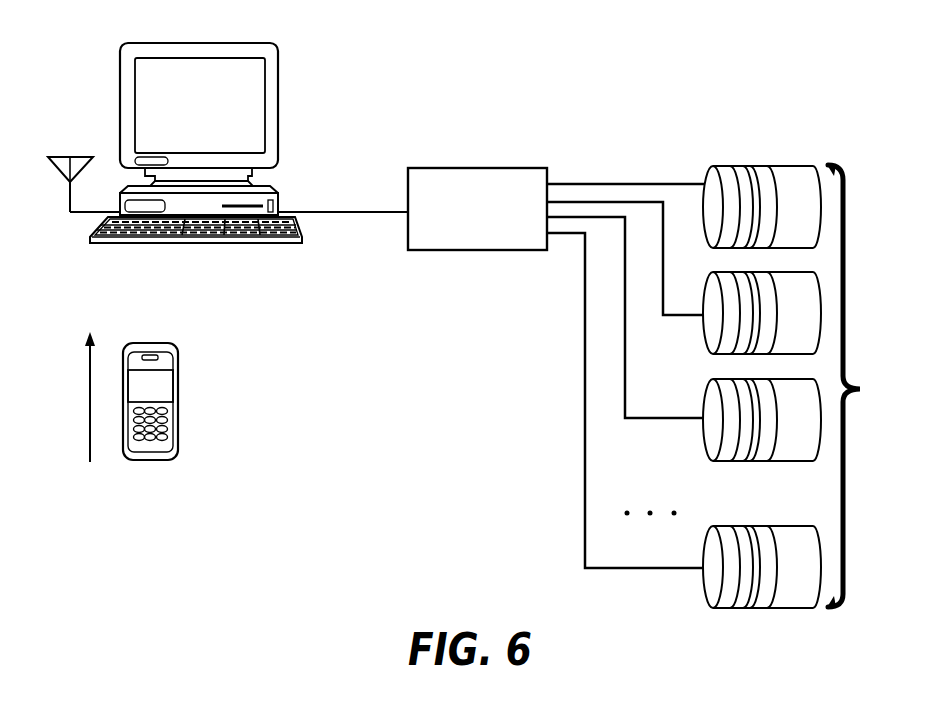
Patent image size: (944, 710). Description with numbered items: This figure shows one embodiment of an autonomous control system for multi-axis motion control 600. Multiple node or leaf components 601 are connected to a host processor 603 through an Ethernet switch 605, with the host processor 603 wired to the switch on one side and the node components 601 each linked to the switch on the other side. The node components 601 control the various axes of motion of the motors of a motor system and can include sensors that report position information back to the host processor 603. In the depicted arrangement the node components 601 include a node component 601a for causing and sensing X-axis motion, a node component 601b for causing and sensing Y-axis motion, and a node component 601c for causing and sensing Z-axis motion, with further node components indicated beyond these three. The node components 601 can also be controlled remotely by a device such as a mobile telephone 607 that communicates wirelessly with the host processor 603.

The autonomous control system for multi-axis motion control 600 is at (677, 73).
The node components 601 is at (774, 361).
The node component for X-axis motion 601a is at (767, 167).
The node component for Y-axis motion 601b is at (705, 330).
The node component for Z-axis motion 601c is at (701, 440).
The host processor 603 is at (265, 188).
The Ethernet switch 605 is at (477, 168).
The mobile telephone 607 is at (175, 404).